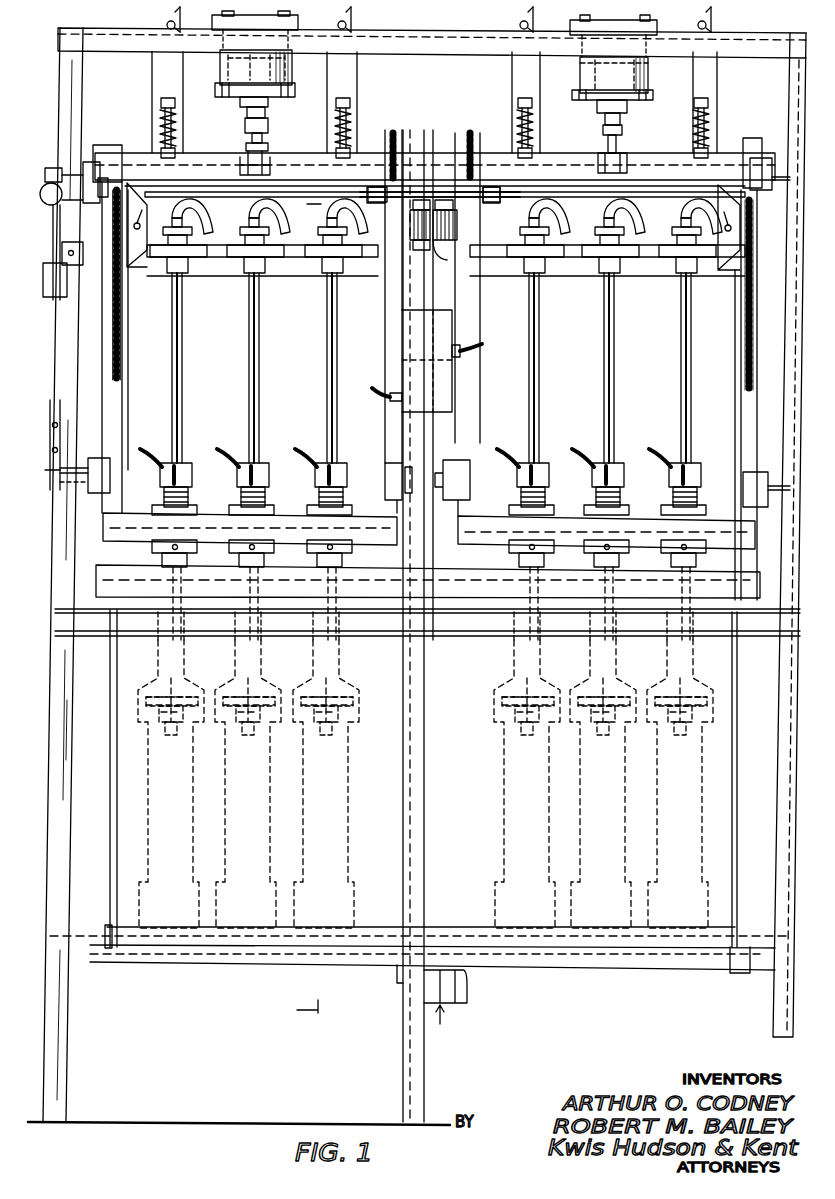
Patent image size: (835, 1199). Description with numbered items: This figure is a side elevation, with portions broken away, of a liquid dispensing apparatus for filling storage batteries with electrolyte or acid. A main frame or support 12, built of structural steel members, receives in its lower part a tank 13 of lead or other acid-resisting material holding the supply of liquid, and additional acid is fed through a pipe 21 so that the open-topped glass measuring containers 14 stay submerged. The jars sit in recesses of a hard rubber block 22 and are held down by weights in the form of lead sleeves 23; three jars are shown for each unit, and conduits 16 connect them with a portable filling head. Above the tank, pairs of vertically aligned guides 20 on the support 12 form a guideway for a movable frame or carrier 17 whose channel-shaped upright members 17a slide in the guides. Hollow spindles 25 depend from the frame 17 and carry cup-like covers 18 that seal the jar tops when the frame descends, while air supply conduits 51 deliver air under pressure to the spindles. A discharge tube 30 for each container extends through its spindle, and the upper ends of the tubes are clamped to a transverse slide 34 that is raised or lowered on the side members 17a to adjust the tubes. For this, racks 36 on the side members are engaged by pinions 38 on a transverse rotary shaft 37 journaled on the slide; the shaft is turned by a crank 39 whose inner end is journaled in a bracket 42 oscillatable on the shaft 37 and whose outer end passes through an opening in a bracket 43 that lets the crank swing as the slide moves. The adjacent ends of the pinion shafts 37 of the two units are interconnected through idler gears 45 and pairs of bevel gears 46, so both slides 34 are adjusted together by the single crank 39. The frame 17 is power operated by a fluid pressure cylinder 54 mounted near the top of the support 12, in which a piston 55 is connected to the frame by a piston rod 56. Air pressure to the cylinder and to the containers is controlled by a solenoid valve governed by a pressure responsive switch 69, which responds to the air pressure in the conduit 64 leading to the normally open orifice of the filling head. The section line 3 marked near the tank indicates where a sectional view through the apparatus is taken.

The section line 3- 3 is at (301, 610).
The frame 12 is at (68, 682).
The tank 13 is at (112, 721).
The measuring containers 14 is at (148, 782).
The conduits 16 is at (289, 226).
The movable frame 17 is at (123, 413).
The upright members 17a is at (116, 392).
The covers 18 is at (358, 706).
The guides 20 is at (111, 480).
The pipe 21 is at (470, 978).
The hard rubber block 22 is at (735, 936).
The lead sleeves 23 is at (496, 907).
The hollow spindle 25 is at (186, 652).
The discharge tube 30 is at (252, 412).
The slide 34 is at (220, 243).
The racks 36 is at (126, 330).
The rotary shaft 37 is at (198, 200).
The pinions 38 is at (392, 184).
The crank 39 is at (52, 462).
The bracket 42 is at (55, 167).
The bracket 43 is at (48, 263).
The idler gears 45 is at (433, 250).
The bevel gears 46 is at (433, 193).
The air supply conduits 51 is at (158, 452).
The fluid pressure cylinder 54 is at (292, 86).
The piston 55 is at (645, 74).
The piston rod 56 is at (272, 146).
The conduit 64 is at (484, 352).
The pressure responsive switch 69 is at (445, 325).